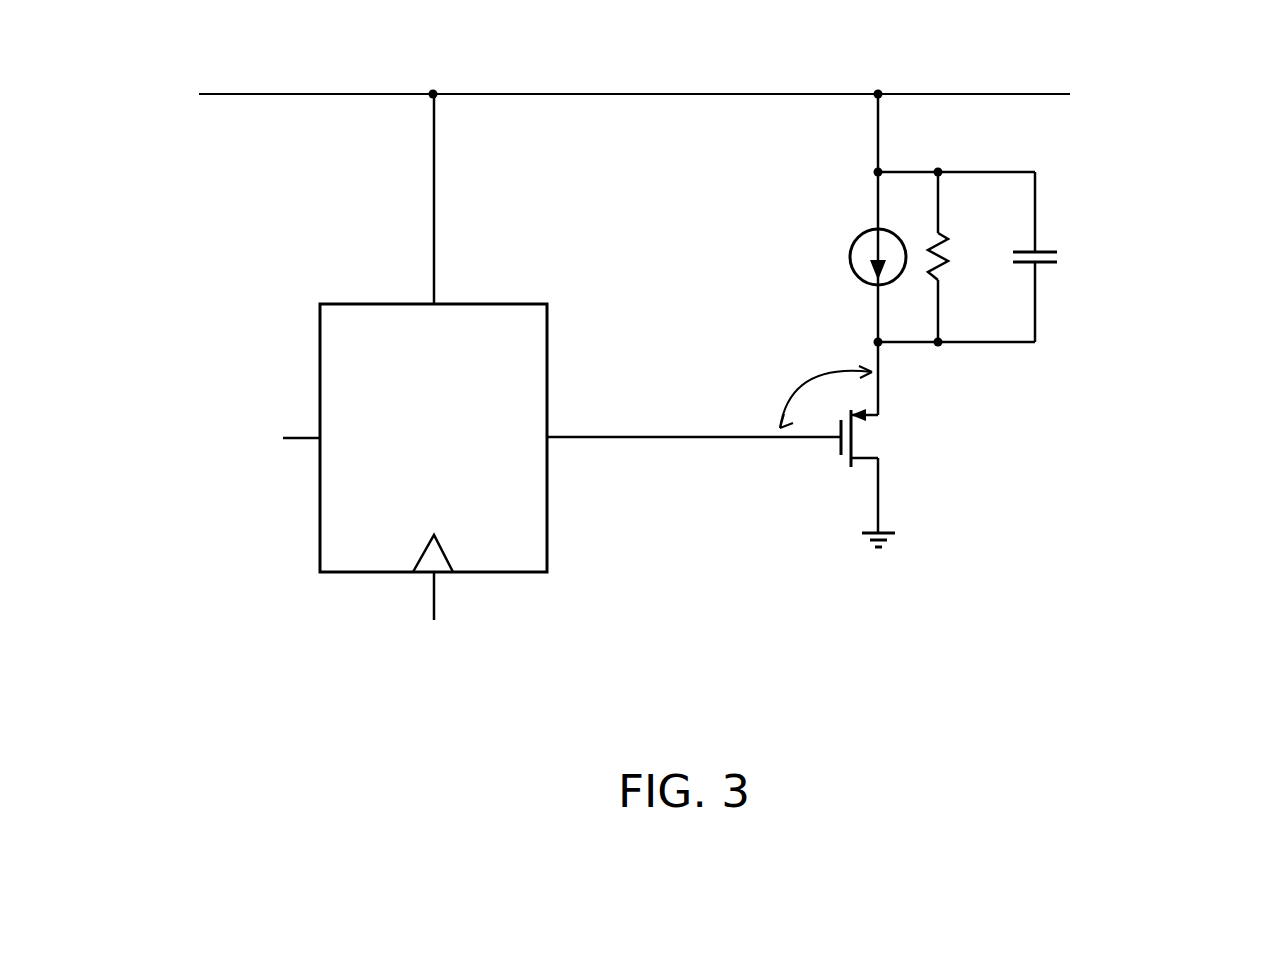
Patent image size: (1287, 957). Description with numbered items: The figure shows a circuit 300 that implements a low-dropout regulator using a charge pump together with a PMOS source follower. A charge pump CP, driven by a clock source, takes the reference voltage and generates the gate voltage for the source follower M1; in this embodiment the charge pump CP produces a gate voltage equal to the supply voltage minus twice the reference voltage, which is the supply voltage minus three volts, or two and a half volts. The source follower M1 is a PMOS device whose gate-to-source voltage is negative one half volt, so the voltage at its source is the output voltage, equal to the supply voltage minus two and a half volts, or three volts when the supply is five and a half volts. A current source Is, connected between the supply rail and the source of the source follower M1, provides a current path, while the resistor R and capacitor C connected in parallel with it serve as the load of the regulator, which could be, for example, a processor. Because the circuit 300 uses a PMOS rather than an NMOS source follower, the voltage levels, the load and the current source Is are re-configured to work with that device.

The circuit 300 is at (797, 665).
The charge pump CP is at (433, 438).
The current source Is is at (850, 255).
The resistor R is at (948, 255).
The capacitor C is at (1058, 256).
The source follower M1 is at (873, 438).